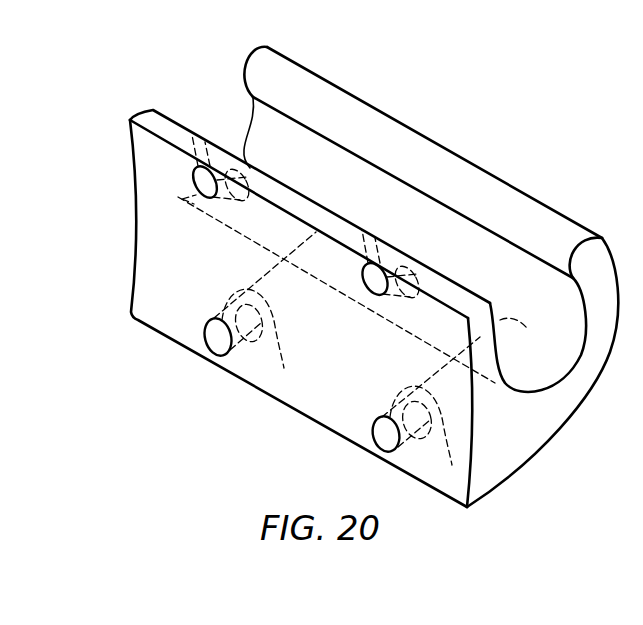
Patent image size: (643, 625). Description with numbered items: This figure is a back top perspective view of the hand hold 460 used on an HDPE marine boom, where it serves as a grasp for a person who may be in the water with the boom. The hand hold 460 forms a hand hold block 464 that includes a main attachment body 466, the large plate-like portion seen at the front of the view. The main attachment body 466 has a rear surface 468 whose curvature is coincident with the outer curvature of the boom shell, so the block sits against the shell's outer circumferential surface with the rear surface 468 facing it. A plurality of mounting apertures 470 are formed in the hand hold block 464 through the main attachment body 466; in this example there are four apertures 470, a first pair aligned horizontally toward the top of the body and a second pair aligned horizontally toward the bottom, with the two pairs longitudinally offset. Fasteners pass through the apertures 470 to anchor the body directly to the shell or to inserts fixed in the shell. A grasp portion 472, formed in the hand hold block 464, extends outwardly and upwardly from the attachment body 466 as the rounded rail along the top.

The hand hold 460 is at (537, 113).
The hand hold block 464 is at (560, 415).
The main attachment body 466 is at (160, 250).
The rear surface 468 is at (388, 360).
The mounting apertures 470 is at (194, 186).
The grasp portion 472 is at (377, 127).